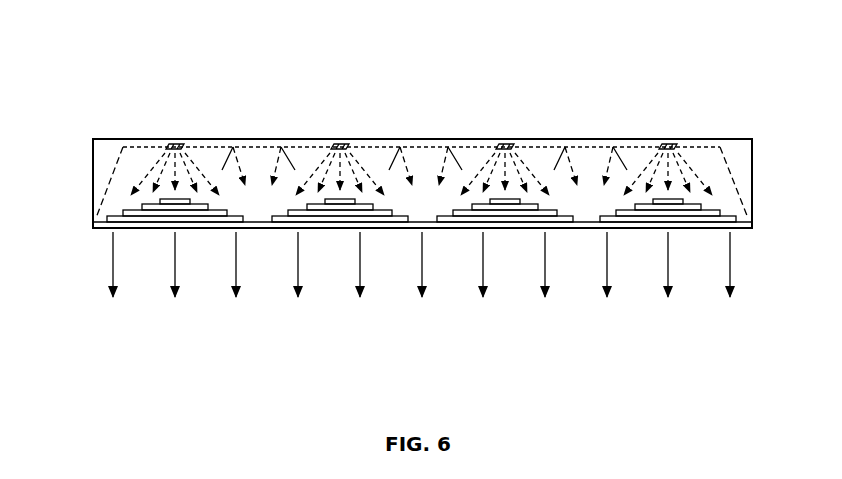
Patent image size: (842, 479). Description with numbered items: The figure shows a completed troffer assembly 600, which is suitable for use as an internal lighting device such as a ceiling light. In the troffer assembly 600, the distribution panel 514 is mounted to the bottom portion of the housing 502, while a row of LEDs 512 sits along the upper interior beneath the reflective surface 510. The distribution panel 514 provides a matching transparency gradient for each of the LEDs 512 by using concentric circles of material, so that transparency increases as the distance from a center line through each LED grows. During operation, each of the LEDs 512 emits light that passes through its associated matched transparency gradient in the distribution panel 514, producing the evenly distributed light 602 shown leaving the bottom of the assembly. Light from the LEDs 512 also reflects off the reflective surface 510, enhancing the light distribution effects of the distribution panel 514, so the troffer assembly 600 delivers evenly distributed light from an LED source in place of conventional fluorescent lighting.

The troffer assembly 600 is at (580, 80).
The housing 502 is at (103, 140).
The reflective surface 510 is at (143, 151).
The LEDs 512 is at (168, 143).
The distribution panel 514 is at (103, 226).
The evenly distributed light 602 is at (215, 308).